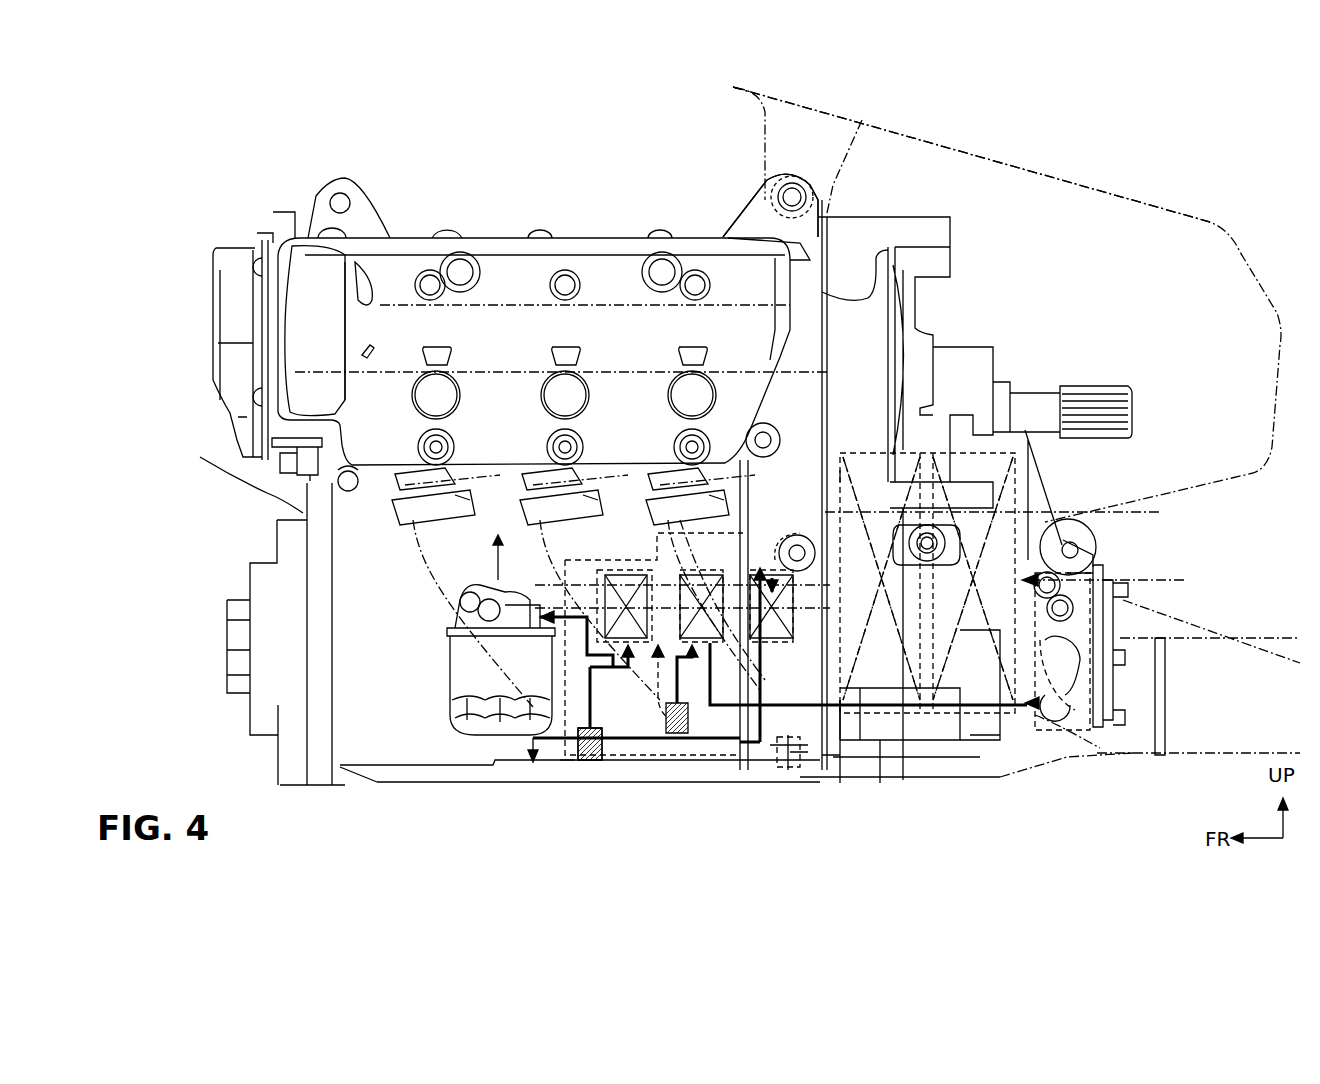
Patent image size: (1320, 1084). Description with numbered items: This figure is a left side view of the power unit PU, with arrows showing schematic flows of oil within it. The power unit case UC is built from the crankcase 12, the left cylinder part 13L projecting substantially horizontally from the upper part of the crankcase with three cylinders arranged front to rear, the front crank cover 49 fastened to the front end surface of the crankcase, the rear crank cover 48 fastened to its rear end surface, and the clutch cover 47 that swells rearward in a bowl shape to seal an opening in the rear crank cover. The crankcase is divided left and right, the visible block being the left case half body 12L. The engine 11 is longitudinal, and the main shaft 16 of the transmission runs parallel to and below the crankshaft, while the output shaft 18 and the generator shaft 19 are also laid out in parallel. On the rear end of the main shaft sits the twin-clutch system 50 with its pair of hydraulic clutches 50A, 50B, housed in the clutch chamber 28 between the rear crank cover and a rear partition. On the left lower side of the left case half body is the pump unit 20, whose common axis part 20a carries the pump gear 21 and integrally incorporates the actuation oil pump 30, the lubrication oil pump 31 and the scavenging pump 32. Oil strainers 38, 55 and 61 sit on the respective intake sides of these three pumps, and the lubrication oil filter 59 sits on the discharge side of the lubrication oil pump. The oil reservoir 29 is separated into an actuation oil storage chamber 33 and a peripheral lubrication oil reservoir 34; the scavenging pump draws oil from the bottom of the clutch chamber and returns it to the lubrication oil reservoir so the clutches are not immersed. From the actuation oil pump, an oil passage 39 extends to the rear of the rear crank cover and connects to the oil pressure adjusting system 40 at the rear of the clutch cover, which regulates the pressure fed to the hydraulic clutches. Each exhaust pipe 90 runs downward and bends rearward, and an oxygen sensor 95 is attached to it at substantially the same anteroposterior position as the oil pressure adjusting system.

The engine 11 is at (445, 220).
The left cylinder part 13L is at (510, 250).
The lubrication oil pump 31 is at (658, 575).
The actuation oil pump 30 is at (698, 620).
The scavenging pump 32 is at (812, 650).
The left case half body 12L is at (803, 257).
The crankcase 12 is at (770, 205).
The power unit case UC is at (823, 217).
The power unit PU is at (938, 184).
The rear crank cover 48 is at (853, 250).
The generator shaft 19 is at (963, 352).
The output shaft 18 is at (1075, 395).
The clutch cover 47 is at (1040, 490).
The main shaft 16 is at (1143, 582).
The front crank cover 49 is at (320, 510).
The lubrication oil filter 59 is at (460, 735).
The lubrication oil reservoir 34 is at (518, 745).
The oil reservoir 29 is at (590, 744).
The oil strainer 55 is at (580, 762).
The actuation oil storage chamber 33 is at (632, 748).
The pump unit 20 is at (650, 752).
The oil strainer 38 is at (700, 760).
The axis part 20a is at (750, 765).
The oil strainer 61 is at (803, 760).
The pump gear 21 is at (813, 760).
The clutch chamber 28 is at (856, 760).
The oil passage 39 is at (868, 742).
The hydraulic clutch 50A is at (903, 752).
The hydraulic clutch 50B is at (953, 752).
The clutch system 50 is at (990, 806).
The oxygen sensor 95 is at (1062, 740).
The oil pressure adjusting system 40 is at (1100, 740).
The exhaust pipe 90 is at (1133, 757).